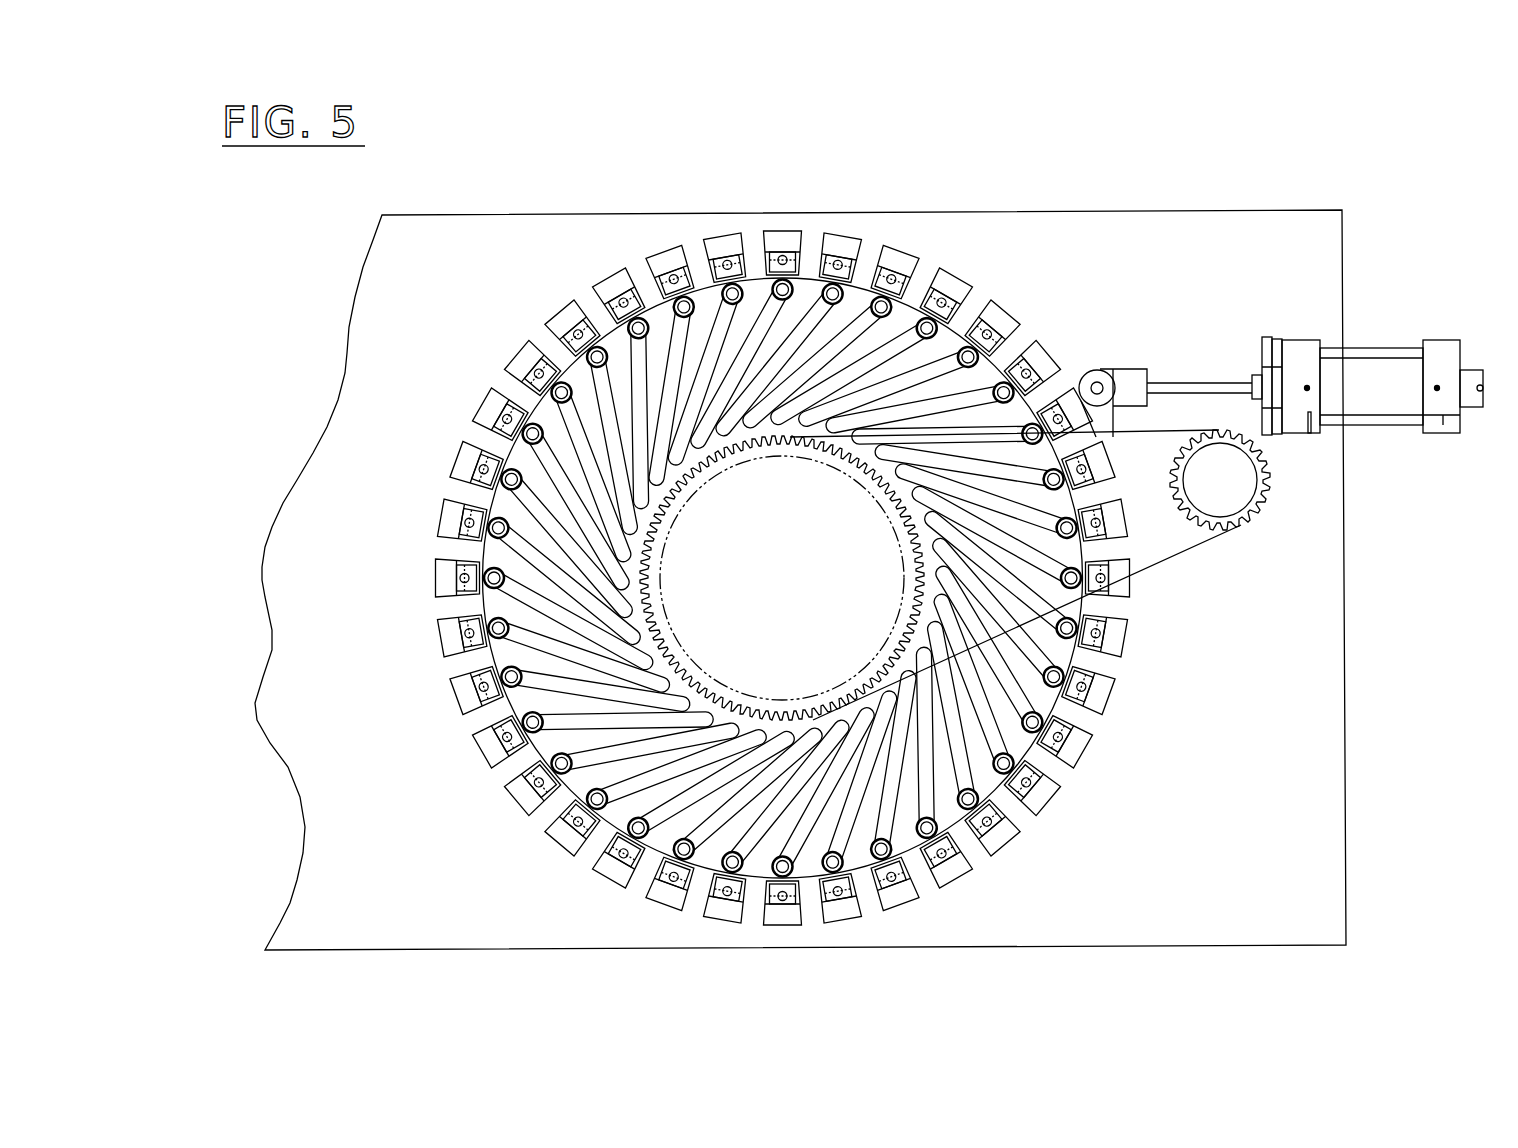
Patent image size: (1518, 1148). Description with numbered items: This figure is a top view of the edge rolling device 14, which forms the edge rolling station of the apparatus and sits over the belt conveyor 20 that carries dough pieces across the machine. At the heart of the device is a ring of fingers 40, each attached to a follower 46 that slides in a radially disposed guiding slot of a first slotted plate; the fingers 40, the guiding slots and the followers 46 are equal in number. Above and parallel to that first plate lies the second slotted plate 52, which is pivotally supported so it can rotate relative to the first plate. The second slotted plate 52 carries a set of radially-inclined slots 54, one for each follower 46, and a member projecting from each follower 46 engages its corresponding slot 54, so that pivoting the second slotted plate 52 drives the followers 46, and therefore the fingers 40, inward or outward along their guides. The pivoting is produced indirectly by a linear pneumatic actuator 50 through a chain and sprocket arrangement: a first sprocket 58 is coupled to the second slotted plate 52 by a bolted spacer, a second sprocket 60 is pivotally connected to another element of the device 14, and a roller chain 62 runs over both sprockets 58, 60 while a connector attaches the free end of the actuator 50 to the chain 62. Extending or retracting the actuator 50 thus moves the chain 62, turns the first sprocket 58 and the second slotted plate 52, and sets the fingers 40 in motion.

The edge rolling device 14 is at (869, 548).
The belt conveyor 20 is at (521, 232).
The fingers 40 is at (753, 536).
The followers 46 is at (882, 250).
The actuator 50 is at (1446, 436).
The second slotted plate 52 is at (552, 423).
The radially-inclined slots 54 is at (532, 556).
The first sprocket 58 is at (660, 617).
The second sprocket 60 is at (1252, 492).
The roller chain 62 is at (1170, 560).